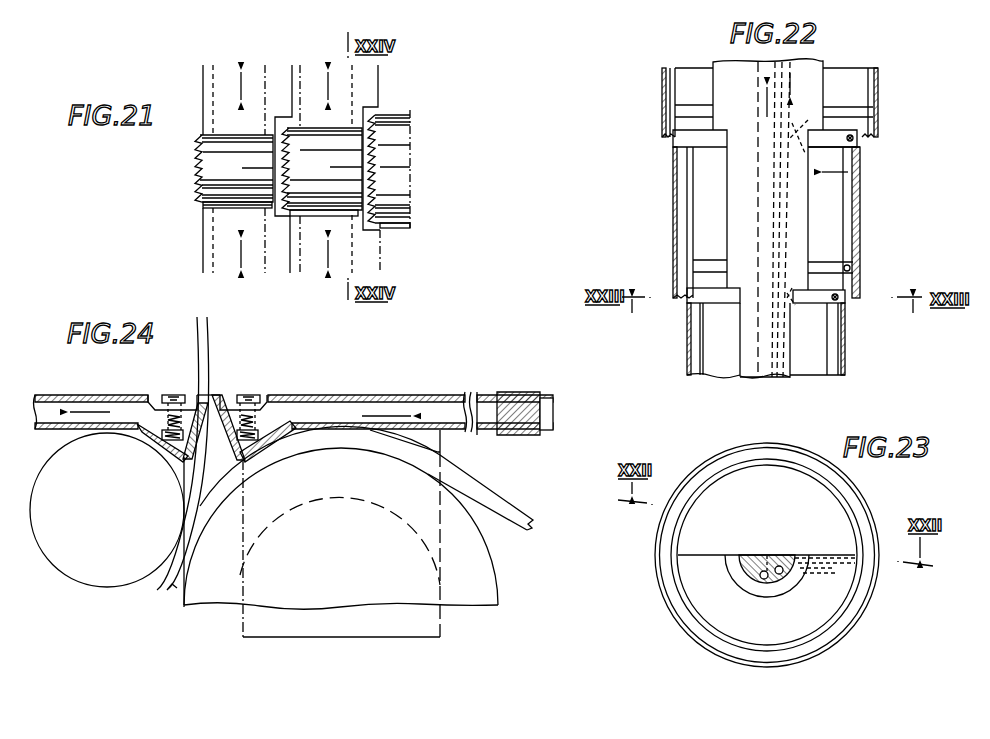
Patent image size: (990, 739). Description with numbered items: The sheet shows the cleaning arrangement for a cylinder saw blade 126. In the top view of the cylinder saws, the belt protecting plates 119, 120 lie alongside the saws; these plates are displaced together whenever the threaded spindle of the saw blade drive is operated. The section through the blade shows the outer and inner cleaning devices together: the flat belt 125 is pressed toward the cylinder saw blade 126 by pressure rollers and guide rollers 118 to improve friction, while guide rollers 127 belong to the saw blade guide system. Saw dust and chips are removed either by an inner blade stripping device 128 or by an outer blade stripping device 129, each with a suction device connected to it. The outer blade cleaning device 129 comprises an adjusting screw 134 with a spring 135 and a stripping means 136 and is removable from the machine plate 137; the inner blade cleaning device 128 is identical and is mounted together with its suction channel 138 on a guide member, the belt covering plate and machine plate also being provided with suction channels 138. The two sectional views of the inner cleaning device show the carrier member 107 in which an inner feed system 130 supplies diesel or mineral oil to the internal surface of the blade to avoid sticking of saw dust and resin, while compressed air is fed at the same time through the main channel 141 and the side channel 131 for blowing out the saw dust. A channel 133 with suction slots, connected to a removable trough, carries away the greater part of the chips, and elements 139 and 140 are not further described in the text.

In FIG. 22, the carrier member 107 is at (730, 75).
In FIG. 23, the carrier member 107 is at (747, 555).
In FIG. 24, the guide rollers 118 is at (480, 570).
In FIG. 21, the belt protecting plate 119 is at (305, 270).
In FIG. 24, the belt protecting plate 119 is at (469, 430).
In FIG. 21, the belt protecting plate 120 is at (312, 72).
In FIG. 24, the belt 125 is at (508, 508).
In FIG. 22, the cylinder saw blade 126 is at (663, 107).
In FIG. 24, the cylinder saw blade 126 is at (208, 352).
In FIG. 24, the guide rollers 127 is at (78, 505).
In FIG. 24, the inner blade stripping device 128 is at (156, 388).
In FIG. 21, the outer blade stripping device 129 is at (203, 205).
In FIG. 24, the outer blade stripping device 129 is at (247, 384).
In FIG. 23, the inner feed system 130 is at (750, 582).
In FIG. 22, the side channel 131 is at (797, 317).
In FIG. 23, the side channel 131 is at (805, 572).
In FIG. 24, the channel 133 is at (167, 395).
In FIG. 24, the adjusting screw 134 is at (257, 395).
In FIG. 24, the spring 135 is at (162, 442).
In FIG. 24, the stripping means 136 is at (193, 452).
In FIG. 24, the machine plate 137 is at (490, 408).
In FIG. 24, the suction channels 138 is at (50, 400).
In FIG. 22, the center channel 139 is at (758, 98).
In FIG. 23, the center channel 139 is at (771, 560).
In FIG. 22, the outlet 140 is at (780, 377).
In FIG. 22, the main channel 141 is at (788, 80).
In FIG. 23, the main channel 141 is at (780, 578).